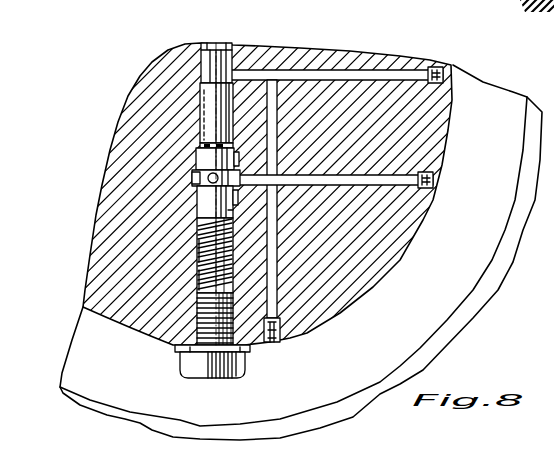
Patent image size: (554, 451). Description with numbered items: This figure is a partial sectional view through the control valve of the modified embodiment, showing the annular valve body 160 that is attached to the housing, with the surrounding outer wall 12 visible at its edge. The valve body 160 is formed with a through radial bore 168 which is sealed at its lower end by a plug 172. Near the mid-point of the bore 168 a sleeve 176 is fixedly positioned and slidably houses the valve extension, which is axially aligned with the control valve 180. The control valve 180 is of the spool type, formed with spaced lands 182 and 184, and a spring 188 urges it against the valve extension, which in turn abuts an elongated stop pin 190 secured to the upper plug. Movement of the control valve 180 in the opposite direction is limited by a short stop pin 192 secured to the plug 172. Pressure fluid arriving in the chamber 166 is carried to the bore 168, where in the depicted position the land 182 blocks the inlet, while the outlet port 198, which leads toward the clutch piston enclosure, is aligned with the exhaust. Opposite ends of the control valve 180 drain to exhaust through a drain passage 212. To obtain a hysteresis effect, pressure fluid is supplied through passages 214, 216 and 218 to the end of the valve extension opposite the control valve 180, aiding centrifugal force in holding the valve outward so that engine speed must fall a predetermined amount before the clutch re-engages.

The housing flange 12 is at (496, 276).
The valve body 160 is at (400, 263).
The chamber 166 is at (195, 122).
The radial bore 168 is at (204, 43).
The plug 172 is at (233, 366).
The sleeve 176 is at (205, 105).
The control valve 180 is at (192, 214).
The land 182 is at (228, 212).
The land 184 is at (200, 157).
The spring 188 is at (197, 283).
The elongated stop pin 190 is at (224, 56).
The short stop pin 192 is at (226, 275).
The outlet port 198 is at (185, 186).
The drain passage 212 is at (197, 247).
The passage 214 is at (258, 185).
The passage 216 is at (280, 152).
The passage 218 is at (253, 70).